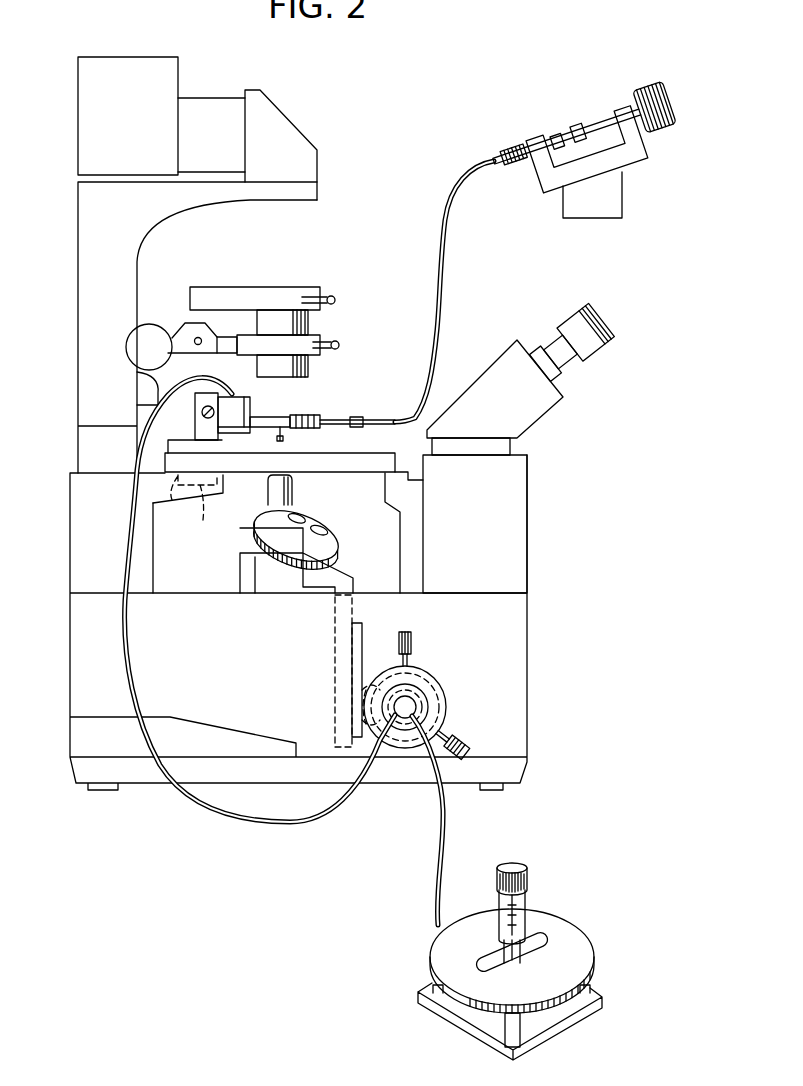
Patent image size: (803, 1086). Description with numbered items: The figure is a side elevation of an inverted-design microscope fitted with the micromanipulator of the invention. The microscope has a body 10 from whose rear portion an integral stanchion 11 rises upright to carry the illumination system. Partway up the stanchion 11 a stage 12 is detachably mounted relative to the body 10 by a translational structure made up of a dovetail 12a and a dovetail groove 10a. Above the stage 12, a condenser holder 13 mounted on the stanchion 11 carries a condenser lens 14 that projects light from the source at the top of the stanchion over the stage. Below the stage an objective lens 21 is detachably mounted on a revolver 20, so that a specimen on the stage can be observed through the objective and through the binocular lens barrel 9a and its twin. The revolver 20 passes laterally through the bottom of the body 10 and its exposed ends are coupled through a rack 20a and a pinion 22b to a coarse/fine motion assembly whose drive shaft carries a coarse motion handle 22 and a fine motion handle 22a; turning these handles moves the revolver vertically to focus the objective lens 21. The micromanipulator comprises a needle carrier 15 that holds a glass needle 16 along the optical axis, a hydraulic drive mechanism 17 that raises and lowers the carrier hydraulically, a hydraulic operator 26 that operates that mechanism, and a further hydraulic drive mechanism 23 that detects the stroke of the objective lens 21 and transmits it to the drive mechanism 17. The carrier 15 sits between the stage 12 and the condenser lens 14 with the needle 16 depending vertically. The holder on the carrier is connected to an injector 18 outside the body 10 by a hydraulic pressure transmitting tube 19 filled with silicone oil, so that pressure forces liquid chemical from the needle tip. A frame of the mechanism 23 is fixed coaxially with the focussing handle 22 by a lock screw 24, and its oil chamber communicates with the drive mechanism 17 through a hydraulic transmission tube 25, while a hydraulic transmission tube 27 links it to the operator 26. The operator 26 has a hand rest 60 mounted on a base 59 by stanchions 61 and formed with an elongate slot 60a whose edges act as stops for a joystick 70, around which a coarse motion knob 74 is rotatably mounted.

The binocular lens barrel 9a is at (582, 315).
The body 10 is at (95, 663).
The dovetail groove 10a is at (182, 497).
The stanchion 11 is at (78, 330).
The stage 12 is at (353, 463).
The dovetail 12a is at (210, 505).
The condenser holder 13 is at (178, 330).
The condenser lens 14 is at (300, 368).
The needle carrier 15 is at (296, 420).
The glass needle 16 is at (285, 440).
The hydraulic drive mechanism 17 is at (233, 404).
The injector 18 is at (537, 140).
The hydraulic pressure transmitting tube 19 is at (441, 290).
The revolver 20 is at (333, 536).
The rack 20a is at (358, 688).
The objective lens 21 is at (270, 492).
The coarse motion handle 22 is at (420, 677).
The fine motion handle 22a is at (400, 730).
The pinion 22b is at (365, 690).
The hydraulic drive mechanism 23 is at (443, 697).
The lock screw 24 is at (408, 648).
The hydraulic transmission tube 25 is at (187, 788).
The hydraulic operator 26 is at (515, 950).
The hydraulic transmission tube 27 is at (442, 810).
The base 59 is at (555, 1025).
The hand rest 60 is at (585, 948).
The elongate slot 60a is at (485, 968).
The stanchions 61 is at (585, 995).
The joystick 70 is at (505, 940).
The coarse motion knob 74 is at (510, 868).